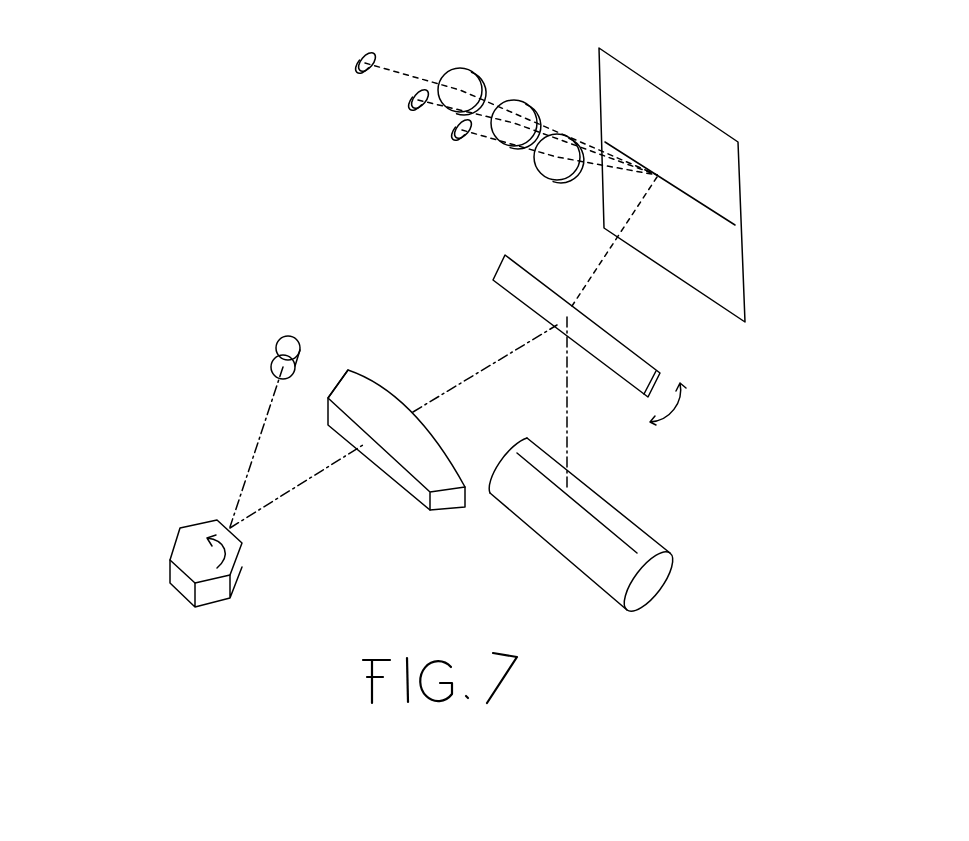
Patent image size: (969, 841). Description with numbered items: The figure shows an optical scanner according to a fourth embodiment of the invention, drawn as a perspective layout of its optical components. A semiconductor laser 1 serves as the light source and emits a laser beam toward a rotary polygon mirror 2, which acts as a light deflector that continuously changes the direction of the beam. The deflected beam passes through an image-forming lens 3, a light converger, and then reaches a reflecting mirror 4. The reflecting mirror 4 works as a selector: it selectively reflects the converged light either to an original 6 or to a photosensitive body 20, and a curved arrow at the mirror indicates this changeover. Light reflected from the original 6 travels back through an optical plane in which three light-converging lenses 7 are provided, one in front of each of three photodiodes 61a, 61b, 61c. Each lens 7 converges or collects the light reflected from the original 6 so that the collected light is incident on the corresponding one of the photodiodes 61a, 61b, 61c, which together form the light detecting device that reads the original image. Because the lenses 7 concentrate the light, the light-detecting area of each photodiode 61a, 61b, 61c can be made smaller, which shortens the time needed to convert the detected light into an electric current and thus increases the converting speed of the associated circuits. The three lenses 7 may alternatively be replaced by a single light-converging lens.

The semiconductor laser 1 is at (275, 352).
The rotary polygon mirror 2 is at (182, 528).
The image-forming lens 3 is at (452, 512).
The reflecting mirror 4 is at (500, 257).
The original 6 is at (742, 192).
The light-converging lens 7 is at (562, 120).
The photosensitive body 20 is at (673, 557).
The photodiode 61a is at (356, 62).
The photodiode 61b is at (410, 105).
The photodiode 61c is at (452, 140).